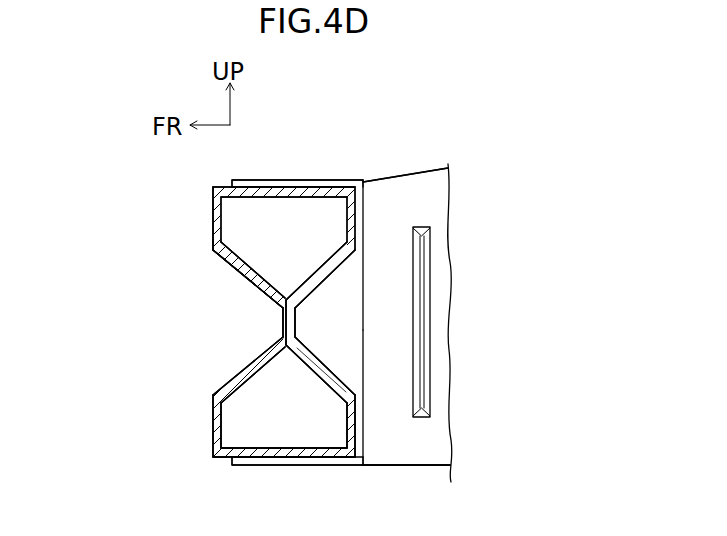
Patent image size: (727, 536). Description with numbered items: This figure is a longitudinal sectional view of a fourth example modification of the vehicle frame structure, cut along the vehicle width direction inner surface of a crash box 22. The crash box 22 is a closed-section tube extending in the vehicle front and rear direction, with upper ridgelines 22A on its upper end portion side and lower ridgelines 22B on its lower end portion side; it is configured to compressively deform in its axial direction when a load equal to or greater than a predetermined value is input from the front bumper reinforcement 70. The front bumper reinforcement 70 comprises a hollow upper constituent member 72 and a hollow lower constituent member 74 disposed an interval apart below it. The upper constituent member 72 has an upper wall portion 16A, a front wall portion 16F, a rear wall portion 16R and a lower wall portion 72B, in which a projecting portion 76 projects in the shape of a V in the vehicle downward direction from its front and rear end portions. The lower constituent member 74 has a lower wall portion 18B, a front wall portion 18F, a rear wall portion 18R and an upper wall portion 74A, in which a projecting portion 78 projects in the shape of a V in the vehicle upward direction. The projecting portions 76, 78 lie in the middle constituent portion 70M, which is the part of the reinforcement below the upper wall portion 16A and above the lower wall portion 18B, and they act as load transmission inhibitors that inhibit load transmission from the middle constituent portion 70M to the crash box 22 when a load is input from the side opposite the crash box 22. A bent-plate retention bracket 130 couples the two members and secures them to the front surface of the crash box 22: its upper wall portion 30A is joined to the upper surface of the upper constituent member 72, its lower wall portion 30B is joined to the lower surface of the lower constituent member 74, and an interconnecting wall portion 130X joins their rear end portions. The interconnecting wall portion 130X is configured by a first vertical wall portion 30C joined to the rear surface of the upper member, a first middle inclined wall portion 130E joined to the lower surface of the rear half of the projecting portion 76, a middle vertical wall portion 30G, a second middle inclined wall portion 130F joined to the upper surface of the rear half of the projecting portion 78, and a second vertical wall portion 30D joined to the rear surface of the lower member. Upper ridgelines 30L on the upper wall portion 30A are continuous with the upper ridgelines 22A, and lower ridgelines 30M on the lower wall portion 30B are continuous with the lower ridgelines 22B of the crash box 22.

The upper wall portion 16A is at (287, 180).
The front wall portion 16F is at (211, 211).
The rear wall portion 16R is at (352, 223).
The lower wall portion 18B is at (255, 457).
The front wall portion 18F is at (211, 428).
The rear wall portion 18R is at (352, 432).
The crash box 22 is at (422, 160).
The upper ridgeline 22A is at (407, 177).
The lower ridgeline 22B is at (423, 465).
The upper wall portion 30A is at (320, 180).
The lower wall portion 30B is at (307, 465).
The first vertical wall portion 30C is at (367, 208).
The second vertical wall portion 30D is at (365, 416).
The middle vertical wall portion 30G is at (283, 322).
The upper ridgeline 30L is at (345, 180).
The lower ridgeline 30M is at (327, 465).
The front bumper reinforcement 70 is at (188, 180).
The middle constituent portion 70M is at (187, 252).
The upper constituent member 72 is at (186, 229).
The lower wall portion 72B is at (230, 266).
The lower constituent member 74 is at (190, 415).
The upper wall portion 74A is at (235, 366).
The projecting portion 76 is at (255, 292).
The projecting portion 78 is at (257, 356).
The retention bracket 130 is at (340, 165).
The first middle inclined wall portion 130E is at (334, 280).
The second middle inclined wall portion 130F is at (334, 363).
The interconnecting wall portion 130X is at (374, 240).